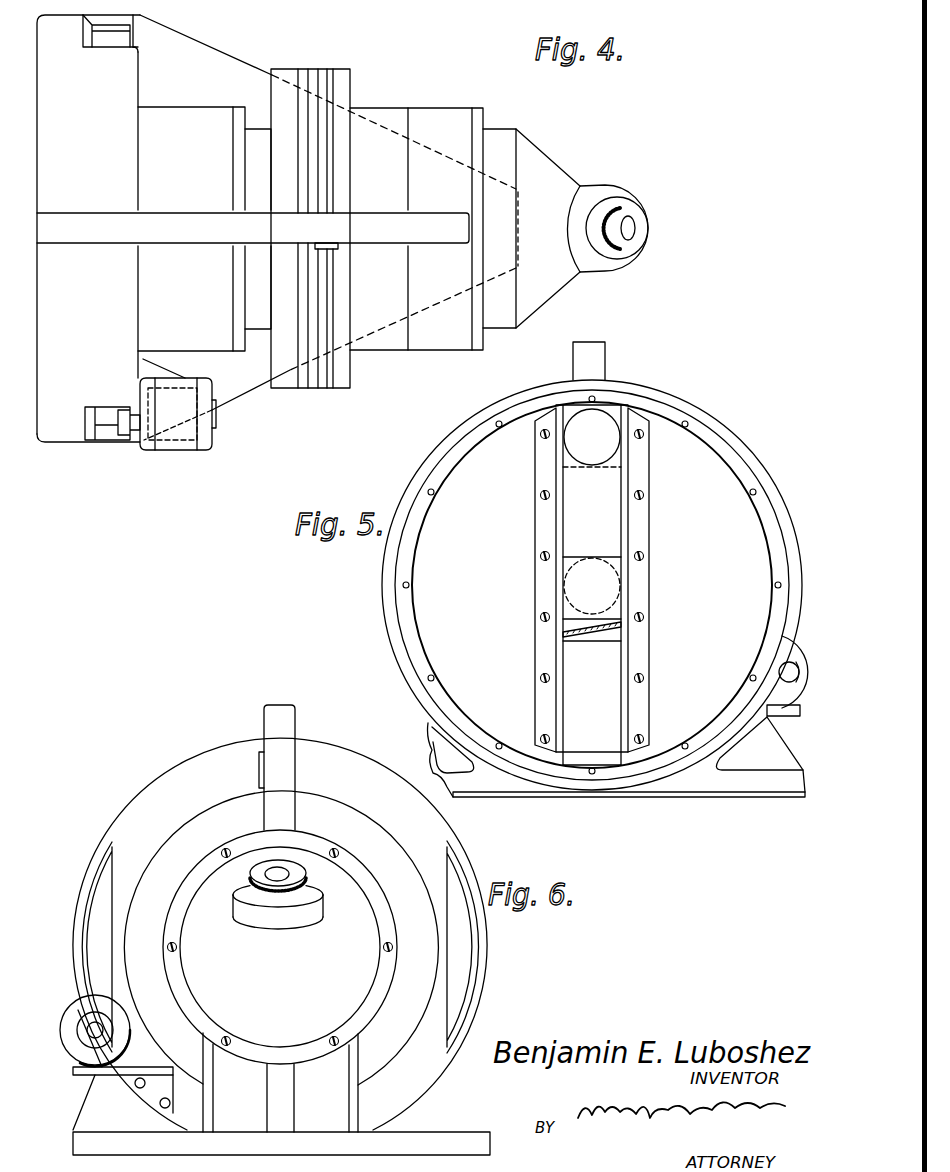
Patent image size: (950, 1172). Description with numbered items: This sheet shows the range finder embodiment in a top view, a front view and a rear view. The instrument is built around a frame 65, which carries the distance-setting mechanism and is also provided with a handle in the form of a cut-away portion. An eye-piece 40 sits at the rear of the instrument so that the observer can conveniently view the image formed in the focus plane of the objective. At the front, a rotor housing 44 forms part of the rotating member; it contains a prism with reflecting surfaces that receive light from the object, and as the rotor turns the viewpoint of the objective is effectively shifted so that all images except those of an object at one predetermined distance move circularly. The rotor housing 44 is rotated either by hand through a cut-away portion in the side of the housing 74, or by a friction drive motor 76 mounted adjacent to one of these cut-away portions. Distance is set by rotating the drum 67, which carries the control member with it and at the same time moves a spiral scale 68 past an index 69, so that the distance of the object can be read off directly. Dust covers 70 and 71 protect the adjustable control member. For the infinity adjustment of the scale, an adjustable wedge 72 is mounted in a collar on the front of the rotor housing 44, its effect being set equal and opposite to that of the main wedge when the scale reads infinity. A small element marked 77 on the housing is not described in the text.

In FIG. 4, the eye-piece 40 is at (632, 218).
In FIG. 6, the eye-piece 40 is at (287, 875).
In FIG. 4, the rotor housing 44 is at (118, 37).
In FIG. 5, the rotor housing 44 is at (629, 585).
In FIG. 6, the rotor housing 44 is at (92, 912).
In FIG. 4, the frame 65 is at (253, 228).
In FIG. 5, the frame 65 is at (607, 353).
In FIG. 6, the frame 65 is at (294, 712).
In FIG. 4, the drum 67 is at (343, 72).
In FIG. 6, the drum 67 is at (328, 808).
In FIG. 4, the spiral scale 68 is at (309, 74).
In FIG. 4, the index 69 is at (339, 246).
In FIG. 6, the index 69 is at (258, 770).
In FIG. 4, the dust cover 70 is at (465, 229).
In FIG. 4, the dust cover 71 is at (258, 229).
In FIG. 5, the adjustable wedge 72 is at (592, 437).
In FIG. 4, the housing 74 is at (141, 228).
In FIG. 5, the housing 74 is at (762, 483).
In FIG. 6, the housing 74 is at (142, 807).
In FIG. 4, the friction drive motor 76 is at (173, 436).
In FIG. 5, the friction drive motor 76 is at (806, 690).
In FIG. 6, the friction drive motor 76 is at (68, 1027).
In FIG. 4, the switch 77 is at (117, 420).